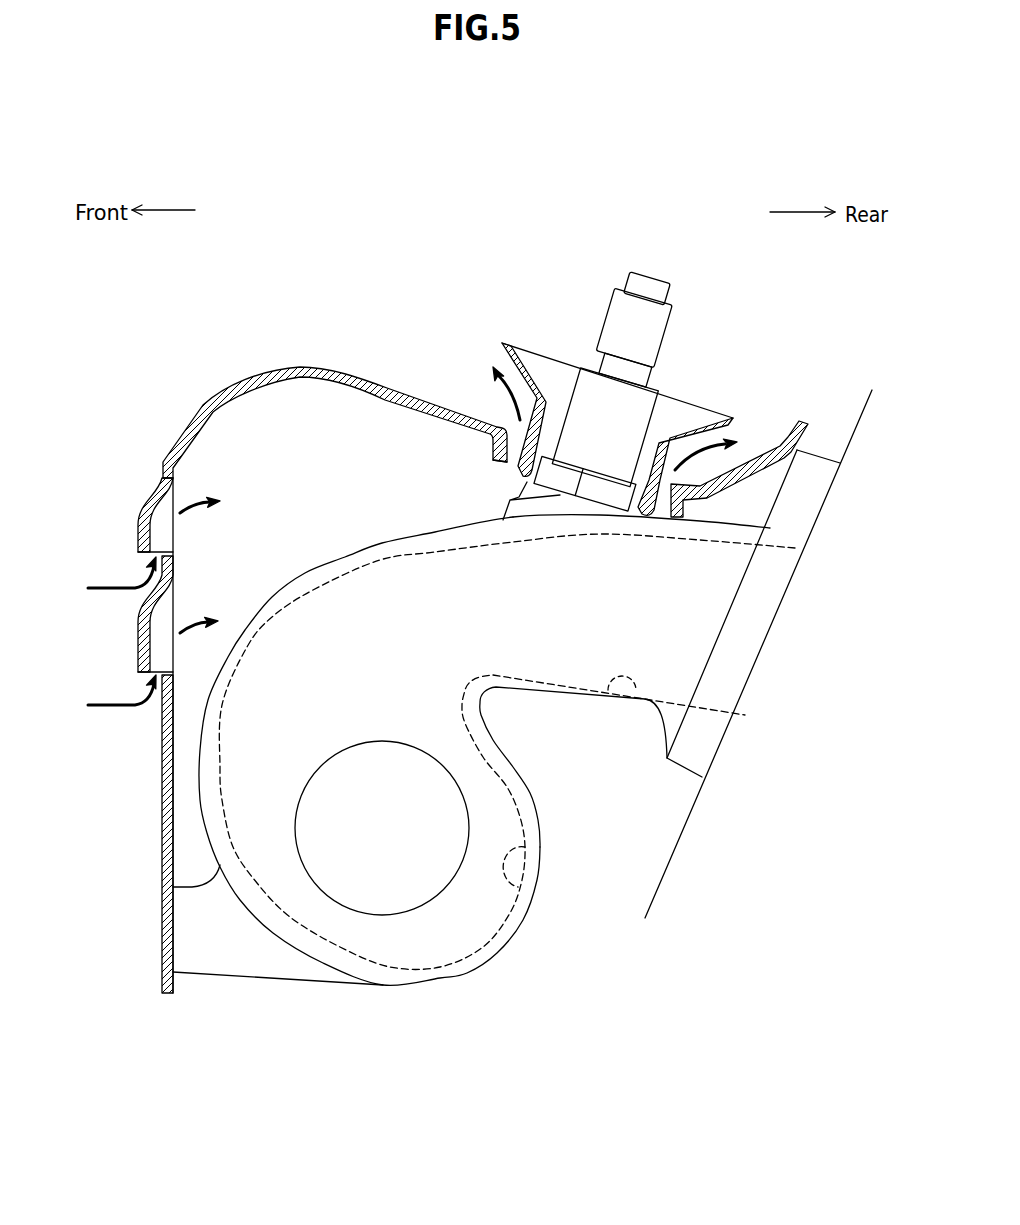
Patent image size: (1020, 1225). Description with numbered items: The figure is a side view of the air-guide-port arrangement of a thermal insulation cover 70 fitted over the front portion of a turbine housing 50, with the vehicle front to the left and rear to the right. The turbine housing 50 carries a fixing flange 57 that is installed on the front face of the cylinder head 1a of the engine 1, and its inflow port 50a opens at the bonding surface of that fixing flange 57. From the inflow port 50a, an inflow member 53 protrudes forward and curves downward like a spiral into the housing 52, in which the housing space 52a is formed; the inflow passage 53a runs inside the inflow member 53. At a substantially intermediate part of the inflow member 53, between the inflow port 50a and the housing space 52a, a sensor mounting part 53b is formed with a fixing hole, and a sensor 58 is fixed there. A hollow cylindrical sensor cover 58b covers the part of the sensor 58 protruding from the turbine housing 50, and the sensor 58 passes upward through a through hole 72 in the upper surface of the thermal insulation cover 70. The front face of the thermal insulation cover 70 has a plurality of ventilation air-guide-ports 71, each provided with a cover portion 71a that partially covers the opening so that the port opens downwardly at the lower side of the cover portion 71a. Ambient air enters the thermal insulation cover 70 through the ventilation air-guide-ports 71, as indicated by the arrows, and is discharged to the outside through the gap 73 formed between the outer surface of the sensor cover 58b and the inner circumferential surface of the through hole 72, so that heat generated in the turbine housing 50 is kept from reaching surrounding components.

The vehicle 1 is at (758, 614).
The cylinder head 1a is at (848, 400).
The turbine housing 50 is at (503, 785).
The inflow port 50a is at (745, 715).
The housing 52 is at (498, 934).
The housing space 52a is at (530, 886).
The inflow member 53 is at (543, 688).
The inflow passage 53a is at (634, 695).
The sensor mounting part 53b is at (505, 506).
The fixing flange 57 is at (750, 622).
The sensor 58 is at (650, 330).
The sensor cover 58b is at (544, 370).
The thermal insulation cover 70 is at (335, 391).
The ventilation air-guide-port 71 is at (150, 566).
The cover portion 71a is at (137, 535).
The through hole 72 is at (510, 425).
The gap 73 is at (505, 477).